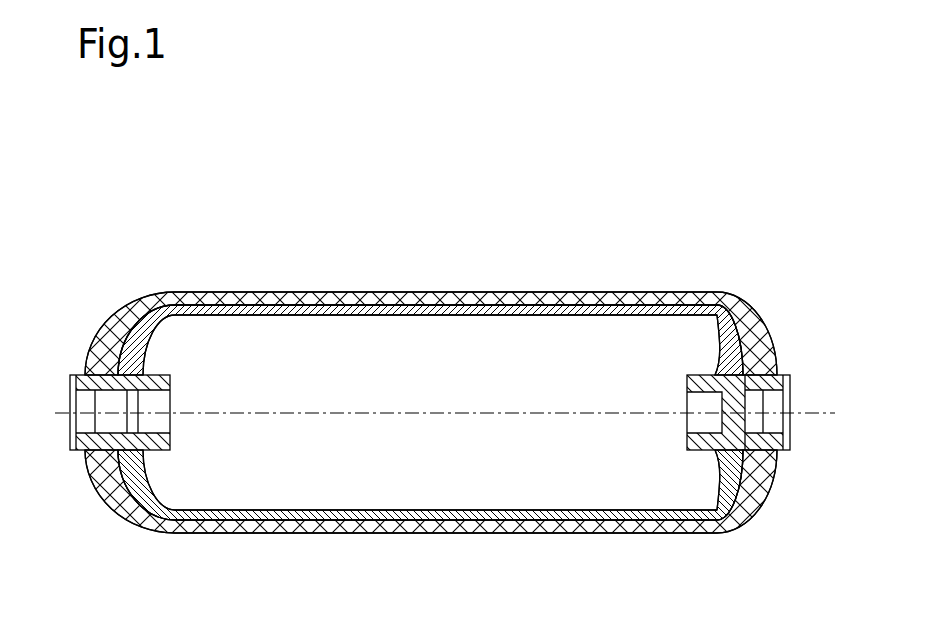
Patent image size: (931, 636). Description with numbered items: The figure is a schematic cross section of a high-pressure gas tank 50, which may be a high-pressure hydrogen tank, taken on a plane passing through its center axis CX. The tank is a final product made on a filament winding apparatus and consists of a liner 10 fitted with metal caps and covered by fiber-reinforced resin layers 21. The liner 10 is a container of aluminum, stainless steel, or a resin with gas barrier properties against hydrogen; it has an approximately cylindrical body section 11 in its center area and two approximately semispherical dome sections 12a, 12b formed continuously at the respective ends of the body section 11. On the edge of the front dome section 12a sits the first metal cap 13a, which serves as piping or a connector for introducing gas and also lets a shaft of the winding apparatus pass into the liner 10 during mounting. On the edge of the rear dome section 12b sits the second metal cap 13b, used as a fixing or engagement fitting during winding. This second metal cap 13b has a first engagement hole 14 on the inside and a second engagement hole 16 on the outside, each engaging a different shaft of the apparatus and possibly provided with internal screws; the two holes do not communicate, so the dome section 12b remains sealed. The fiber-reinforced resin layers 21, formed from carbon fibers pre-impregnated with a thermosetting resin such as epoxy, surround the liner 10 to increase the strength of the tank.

The high-pressure gas tank 50 is at (665, 230).
The liner 10 is at (318, 515).
The fiber-reinforced resin layers 21 is at (395, 520).
The body section 11 is at (386, 282).
The dome section 12a is at (140, 298).
The dome section 12b is at (748, 315).
The first metal cap 13a is at (82, 452).
The second metal cap 13b is at (782, 448).
The first engagement hole 14 is at (688, 422).
The second engagement hole 16 is at (790, 393).
The center axis CX is at (425, 414).